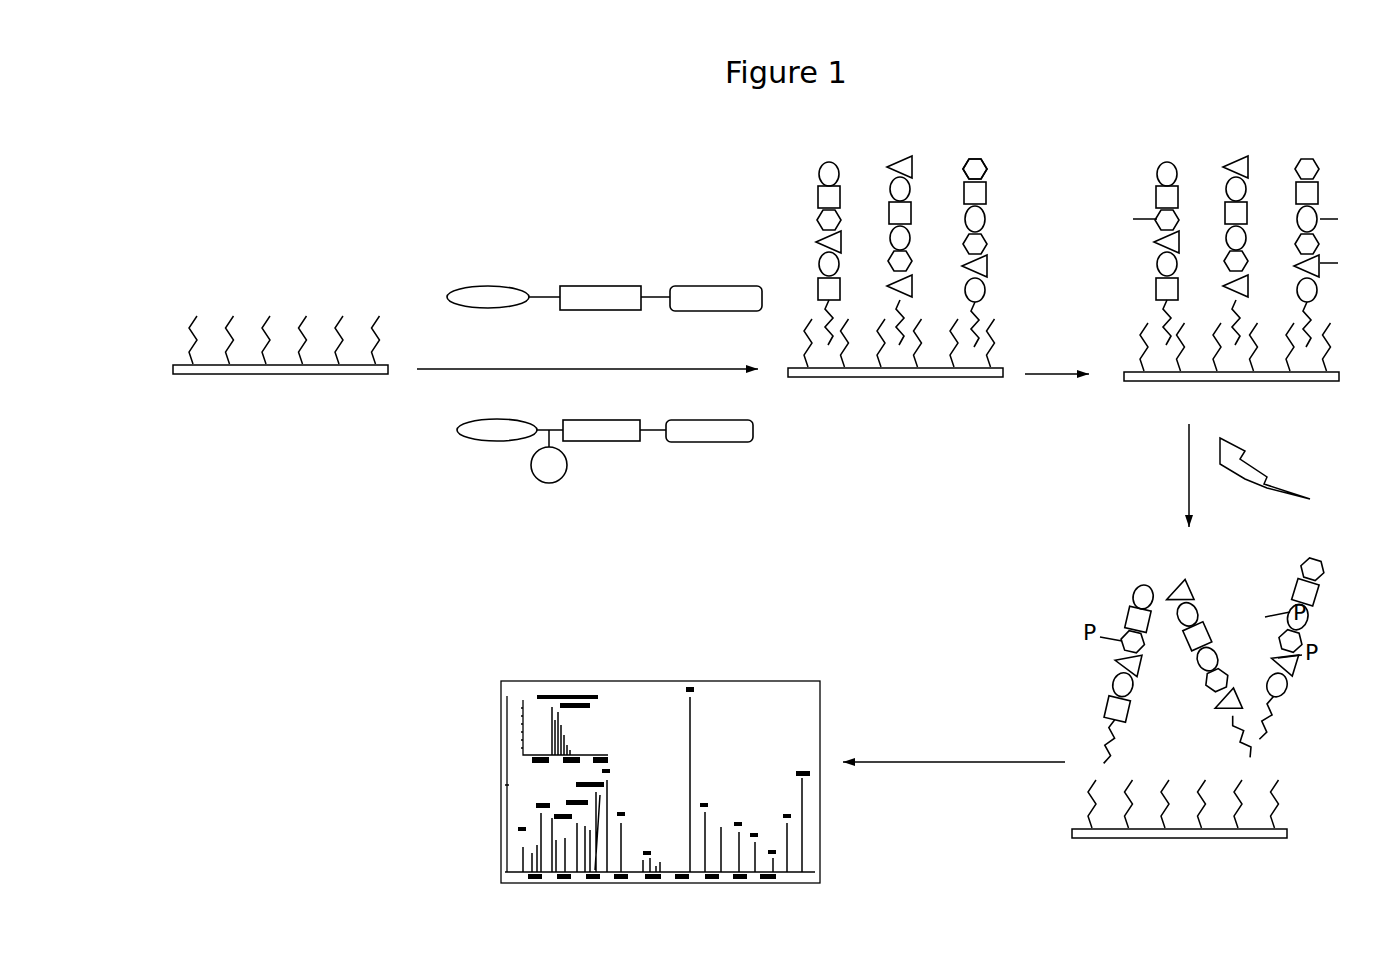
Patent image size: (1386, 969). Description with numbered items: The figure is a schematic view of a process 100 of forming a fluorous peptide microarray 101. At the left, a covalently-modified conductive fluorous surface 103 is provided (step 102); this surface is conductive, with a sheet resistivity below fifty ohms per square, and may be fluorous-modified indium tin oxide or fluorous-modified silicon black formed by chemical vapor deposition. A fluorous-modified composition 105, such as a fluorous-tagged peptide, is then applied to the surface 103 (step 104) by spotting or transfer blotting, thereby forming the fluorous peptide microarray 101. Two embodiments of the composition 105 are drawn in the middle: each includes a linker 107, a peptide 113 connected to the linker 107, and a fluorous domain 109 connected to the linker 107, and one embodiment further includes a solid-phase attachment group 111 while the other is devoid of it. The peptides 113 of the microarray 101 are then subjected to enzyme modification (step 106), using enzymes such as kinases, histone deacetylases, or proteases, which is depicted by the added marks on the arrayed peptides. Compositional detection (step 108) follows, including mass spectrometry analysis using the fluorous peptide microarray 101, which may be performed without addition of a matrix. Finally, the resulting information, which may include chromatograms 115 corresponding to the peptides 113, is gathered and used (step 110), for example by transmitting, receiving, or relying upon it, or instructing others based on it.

The process 100 is at (551, 162).
The fluorous peptide microarray 101 is at (892, 450).
The step of providing covalently-modified conductive fluorous surface 102 is at (302, 297).
The covalently-modified conductive fluorous surface 103 is at (160, 369).
The step of applying fluorous-modified composition 104 is at (608, 248).
The fluorous-modified composition 105 is at (560, 258).
The enzyme modification step 106 is at (1078, 166).
The linker 107 is at (592, 312).
The compositional detection step 108 is at (1172, 495).
The fluorous domain 109 is at (480, 306).
The information gathering and use step 110 is at (880, 725).
The solid-phase attachment group 111 is at (546, 484).
The peptide 113 is at (718, 312).
The chromatogram 115 is at (610, 640).